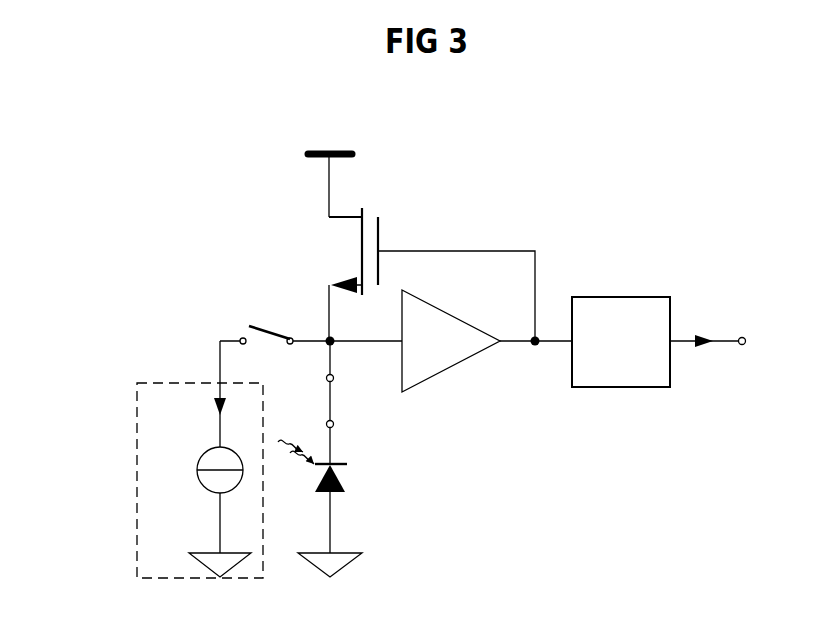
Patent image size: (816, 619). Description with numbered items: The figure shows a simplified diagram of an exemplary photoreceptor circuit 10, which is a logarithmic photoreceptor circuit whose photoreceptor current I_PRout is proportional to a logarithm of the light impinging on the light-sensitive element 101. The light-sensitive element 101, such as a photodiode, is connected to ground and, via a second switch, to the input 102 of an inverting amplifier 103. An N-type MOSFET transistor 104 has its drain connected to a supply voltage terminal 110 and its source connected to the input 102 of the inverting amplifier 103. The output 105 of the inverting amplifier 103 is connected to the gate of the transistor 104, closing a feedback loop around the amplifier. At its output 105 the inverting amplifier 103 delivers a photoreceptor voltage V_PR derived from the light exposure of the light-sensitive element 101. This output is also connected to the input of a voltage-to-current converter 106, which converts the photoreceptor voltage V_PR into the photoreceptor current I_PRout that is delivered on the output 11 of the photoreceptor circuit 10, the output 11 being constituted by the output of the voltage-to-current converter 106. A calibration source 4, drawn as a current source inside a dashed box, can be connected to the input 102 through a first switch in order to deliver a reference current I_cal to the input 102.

The calibration source 4 is at (135, 497).
The photoreceptor circuit 10 is at (641, 165).
The output 11 is at (715, 297).
The light-sensitive element 101 is at (369, 486).
The input 102 is at (313, 331).
The inverting amplifier 103 is at (432, 378).
The N-type MOSFET transistor 104 is at (303, 237).
The output 105 is at (548, 292).
The voltage-to-current converter 106 is at (600, 387).
The supply voltage terminal 110 is at (326, 130).